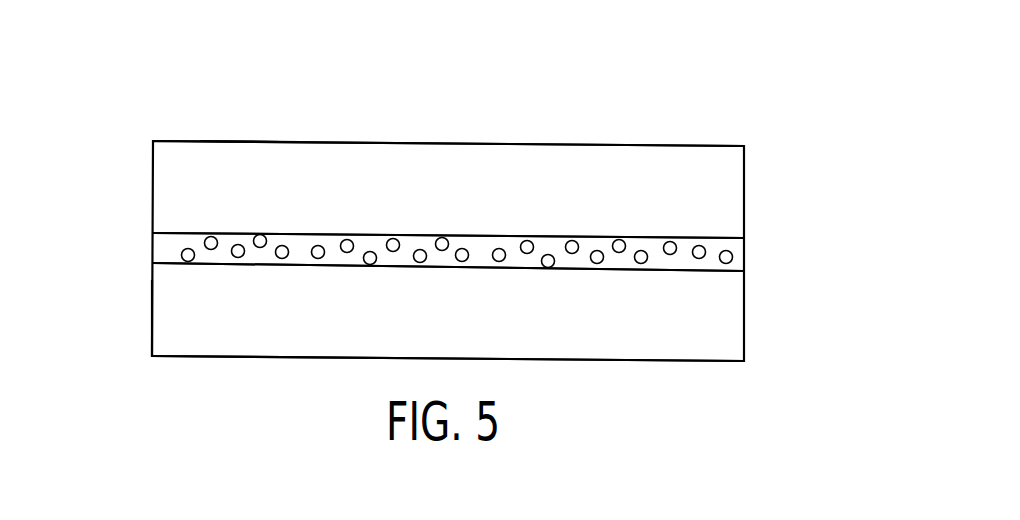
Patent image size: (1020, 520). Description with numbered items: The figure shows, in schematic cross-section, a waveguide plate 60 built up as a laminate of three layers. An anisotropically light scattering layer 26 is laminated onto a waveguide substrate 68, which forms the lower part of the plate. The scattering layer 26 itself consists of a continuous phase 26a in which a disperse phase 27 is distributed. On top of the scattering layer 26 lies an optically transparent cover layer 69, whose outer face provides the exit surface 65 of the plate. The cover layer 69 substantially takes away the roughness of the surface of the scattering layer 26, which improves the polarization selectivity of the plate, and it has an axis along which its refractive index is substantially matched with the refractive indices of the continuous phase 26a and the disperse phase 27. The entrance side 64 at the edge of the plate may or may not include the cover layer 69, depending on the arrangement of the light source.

The waveguide plate 60 is at (118, 116).
The exit surface 65 is at (251, 141).
The cover layer 69 is at (733, 207).
The anisotropically light scattering layer 26 is at (529, 254).
The continuous phase 26a is at (733, 244).
The disperse phase 27 is at (733, 259).
The waveguide substrate 68 is at (732, 308).
The entrance side 64 is at (152, 308).